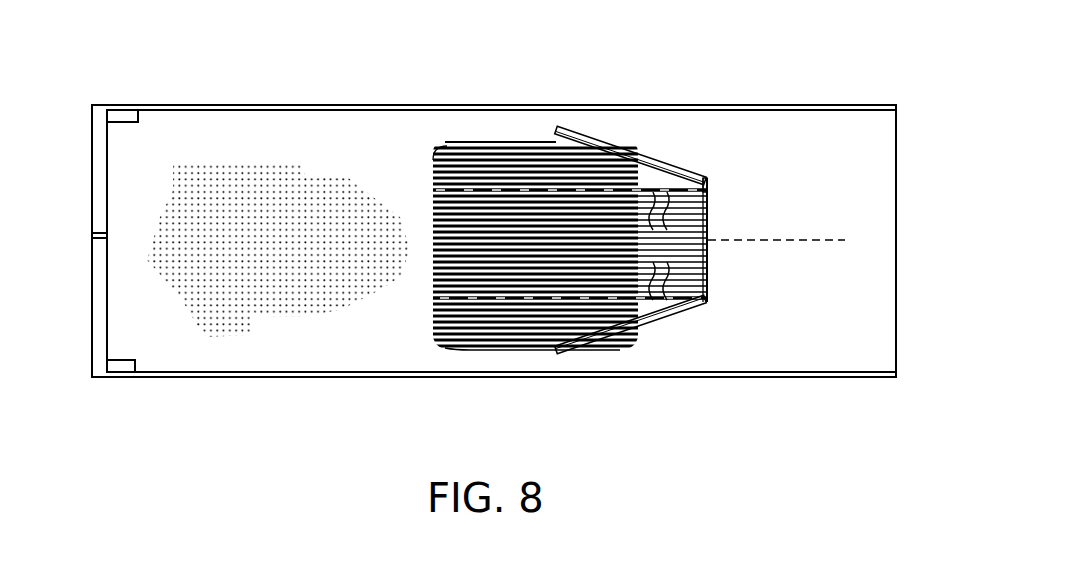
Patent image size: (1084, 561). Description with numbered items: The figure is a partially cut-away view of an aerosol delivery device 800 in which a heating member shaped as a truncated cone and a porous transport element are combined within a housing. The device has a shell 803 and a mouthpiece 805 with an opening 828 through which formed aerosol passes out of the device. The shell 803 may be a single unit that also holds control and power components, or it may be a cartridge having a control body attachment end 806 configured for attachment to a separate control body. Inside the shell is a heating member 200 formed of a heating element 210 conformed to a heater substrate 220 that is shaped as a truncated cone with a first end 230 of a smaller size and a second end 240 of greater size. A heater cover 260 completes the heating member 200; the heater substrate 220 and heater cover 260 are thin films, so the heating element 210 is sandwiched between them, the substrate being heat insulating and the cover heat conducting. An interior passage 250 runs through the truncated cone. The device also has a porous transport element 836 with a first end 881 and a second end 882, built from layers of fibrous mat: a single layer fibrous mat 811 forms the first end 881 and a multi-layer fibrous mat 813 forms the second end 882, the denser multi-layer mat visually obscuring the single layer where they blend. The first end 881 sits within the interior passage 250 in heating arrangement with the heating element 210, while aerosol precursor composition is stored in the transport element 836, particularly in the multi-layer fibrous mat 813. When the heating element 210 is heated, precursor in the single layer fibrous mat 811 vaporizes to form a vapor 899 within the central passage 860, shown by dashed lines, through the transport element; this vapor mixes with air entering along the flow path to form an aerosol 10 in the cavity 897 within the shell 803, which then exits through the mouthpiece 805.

The aerosol delivery device 800 is at (170, 42).
The shell 803 is at (280, 105).
The mouthpiece 805 is at (98, 137).
The control body attachment end 806 is at (930, 131).
The opening 828 is at (96, 236).
The cavity 897 is at (278, 211).
The aerosol 10 is at (262, 313).
The heating member 200 is at (603, 240).
The porous transport element 836 is at (535, 240).
The second end 240 is at (542, 130).
The second end 882 is at (428, 145).
The central passage 860 is at (468, 188).
The multi-layer fibrous mat 813 is at (433, 320).
The vapor 899 is at (600, 300).
The heater substrate 220 is at (615, 150).
The heating element 210 is at (683, 316).
The first end 230 is at (716, 177).
The first end 881 is at (713, 197).
The interior passage 250 is at (709, 218).
The heater cover 260 is at (693, 270).
The single layer fibrous mat 811 is at (690, 243).